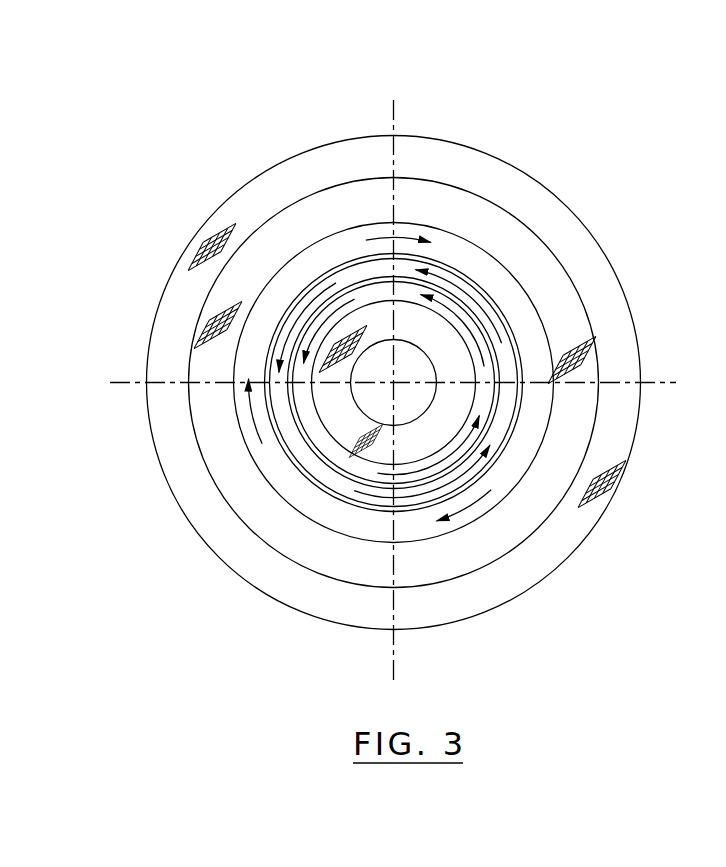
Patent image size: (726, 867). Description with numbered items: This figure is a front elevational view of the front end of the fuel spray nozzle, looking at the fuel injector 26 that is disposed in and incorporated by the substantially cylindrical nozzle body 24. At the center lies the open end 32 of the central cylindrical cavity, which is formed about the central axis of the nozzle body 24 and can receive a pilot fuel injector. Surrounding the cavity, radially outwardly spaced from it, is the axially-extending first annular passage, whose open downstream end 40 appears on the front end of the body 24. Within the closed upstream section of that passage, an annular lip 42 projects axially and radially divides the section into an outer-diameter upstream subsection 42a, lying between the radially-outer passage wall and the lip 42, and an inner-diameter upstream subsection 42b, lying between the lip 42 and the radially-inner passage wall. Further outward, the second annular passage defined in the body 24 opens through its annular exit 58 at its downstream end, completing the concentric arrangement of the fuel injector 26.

The nozzle body 24 is at (500, 606).
The fuel injector 26 is at (579, 152).
The annular exit 58 is at (517, 305).
The open downstream end 40 is at (510, 412).
The annular lip 42 is at (490, 430).
The outer-diameter upstream subsection 42a is at (510, 372).
The inner-diameter upstream subsection 42b is at (483, 357).
The open end 32 is at (424, 413).